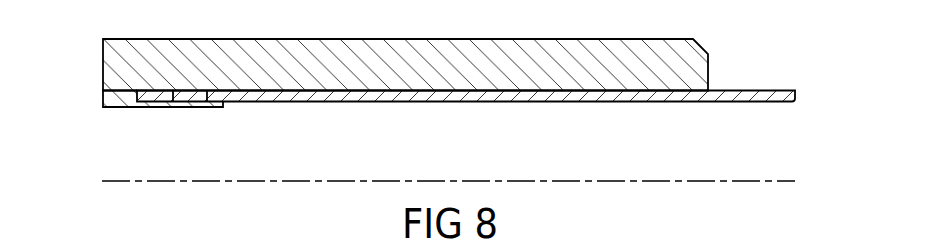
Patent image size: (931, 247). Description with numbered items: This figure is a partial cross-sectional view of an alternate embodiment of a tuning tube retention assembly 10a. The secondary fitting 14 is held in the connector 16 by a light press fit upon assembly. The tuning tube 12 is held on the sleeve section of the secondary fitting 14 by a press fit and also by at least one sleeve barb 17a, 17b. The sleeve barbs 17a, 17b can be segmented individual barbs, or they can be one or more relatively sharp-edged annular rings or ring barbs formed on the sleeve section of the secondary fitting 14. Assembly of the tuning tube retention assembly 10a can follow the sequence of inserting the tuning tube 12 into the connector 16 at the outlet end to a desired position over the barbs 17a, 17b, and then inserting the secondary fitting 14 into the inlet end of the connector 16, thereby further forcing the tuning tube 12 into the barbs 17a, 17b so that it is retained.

The tuning tube retention assembly 10a is at (457, 102).
The tuning tube 12 is at (755, 95).
The secondary fitting 14 is at (117, 98).
The connector 16 is at (453, 46).
The sleeve barb 17a is at (173, 90).
The sleeve barb 17b is at (207, 90).